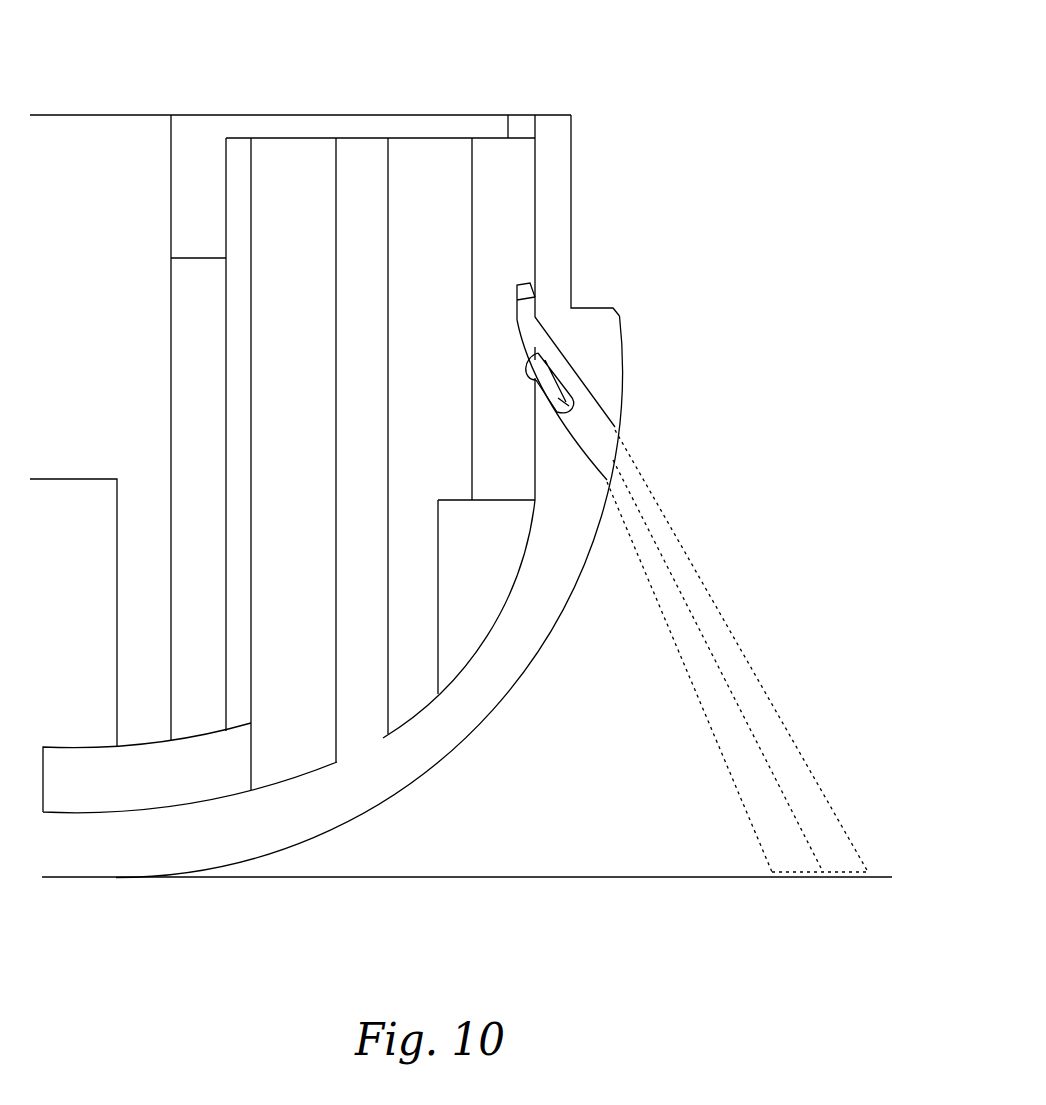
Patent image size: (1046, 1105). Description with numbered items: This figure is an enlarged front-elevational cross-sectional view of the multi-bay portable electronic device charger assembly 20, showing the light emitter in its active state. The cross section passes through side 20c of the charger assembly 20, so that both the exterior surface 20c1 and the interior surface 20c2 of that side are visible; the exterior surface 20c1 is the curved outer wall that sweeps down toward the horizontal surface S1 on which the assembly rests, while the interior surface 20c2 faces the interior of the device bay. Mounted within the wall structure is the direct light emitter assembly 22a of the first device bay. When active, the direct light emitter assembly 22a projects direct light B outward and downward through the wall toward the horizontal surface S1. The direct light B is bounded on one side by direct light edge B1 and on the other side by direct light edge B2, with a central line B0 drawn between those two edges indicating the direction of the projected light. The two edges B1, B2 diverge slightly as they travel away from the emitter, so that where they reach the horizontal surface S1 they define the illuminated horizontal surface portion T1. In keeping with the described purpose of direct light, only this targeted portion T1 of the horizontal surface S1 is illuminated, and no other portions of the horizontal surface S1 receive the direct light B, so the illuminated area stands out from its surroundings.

The multi-bay portable electronic device charger assembly 20 is at (645, 57).
The side 20c is at (612, 248).
The exterior surface 20c1 is at (620, 343).
The interior surface 20c2 is at (533, 235).
The direct light emitter assembly 22a is at (582, 400).
The beam center line B0 is at (708, 645).
The direct light edge B1 is at (718, 743).
The direct light edge B2 is at (767, 693).
The direct light B is at (790, 837).
The illuminated horizontal surface portion T1 is at (843, 872).
The horizontal surface S1 is at (530, 877).